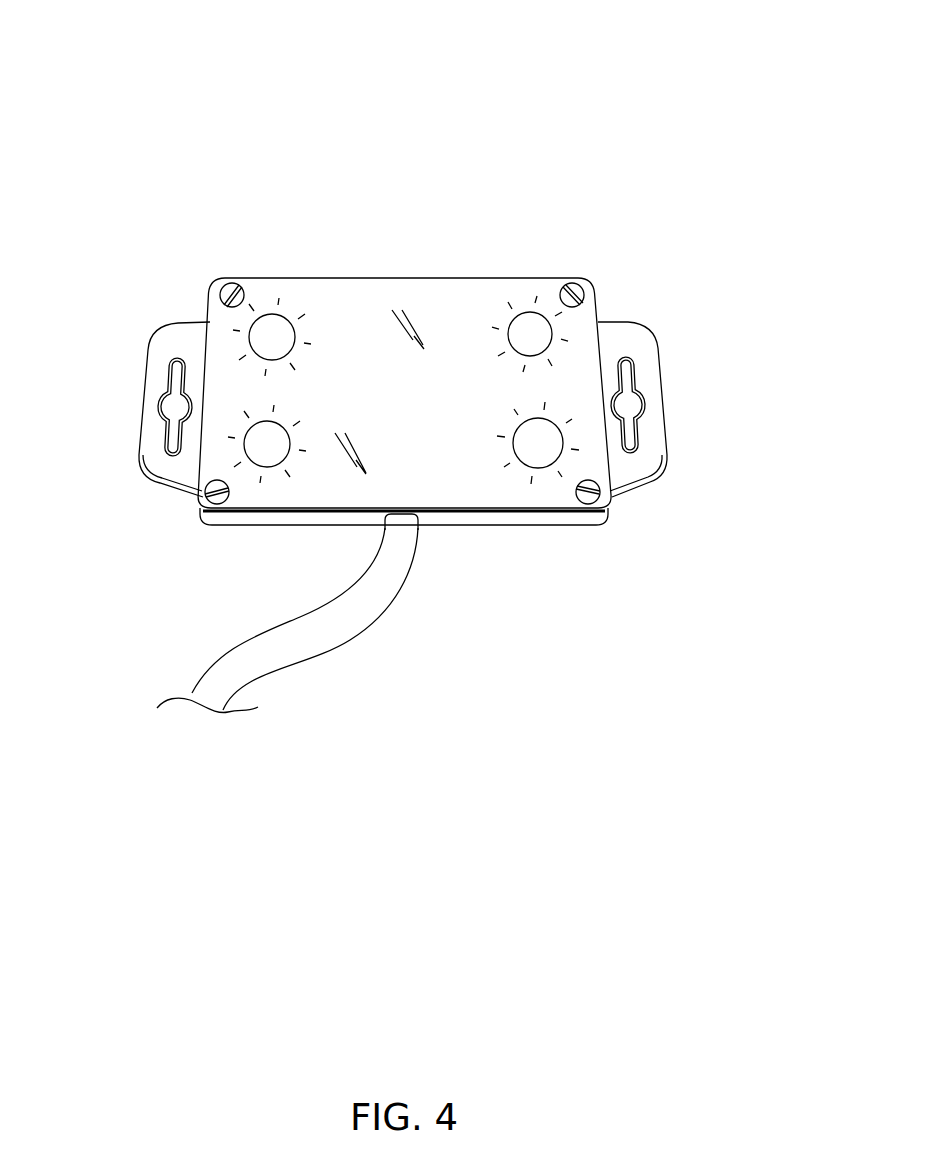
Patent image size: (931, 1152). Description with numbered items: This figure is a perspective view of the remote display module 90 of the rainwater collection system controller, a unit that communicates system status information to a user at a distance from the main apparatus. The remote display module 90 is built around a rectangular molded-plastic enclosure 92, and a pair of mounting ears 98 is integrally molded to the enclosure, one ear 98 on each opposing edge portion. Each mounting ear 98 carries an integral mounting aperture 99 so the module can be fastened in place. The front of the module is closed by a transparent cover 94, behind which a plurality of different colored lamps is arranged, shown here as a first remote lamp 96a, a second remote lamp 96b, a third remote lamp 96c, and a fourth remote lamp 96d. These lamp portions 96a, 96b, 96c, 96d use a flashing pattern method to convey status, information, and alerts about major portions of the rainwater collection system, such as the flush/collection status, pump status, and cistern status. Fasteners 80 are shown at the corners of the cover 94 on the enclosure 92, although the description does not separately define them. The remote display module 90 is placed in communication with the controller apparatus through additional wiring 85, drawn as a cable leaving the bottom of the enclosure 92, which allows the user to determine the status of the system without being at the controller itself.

The remote display module 90 is at (663, 155).
The enclosure 92 is at (610, 460).
The transparent cover 94 is at (464, 306).
The mounting ear 98 is at (667, 435).
The mounting aperture 99 is at (647, 402).
The screw 80 is at (221, 291).
The first remote lamp 96a is at (266, 315).
The second remote lamp 96b is at (553, 331).
The third remote lamp 96c is at (267, 450).
The fourth remote lamp 96d is at (548, 466).
The additional wiring 85 is at (400, 577).